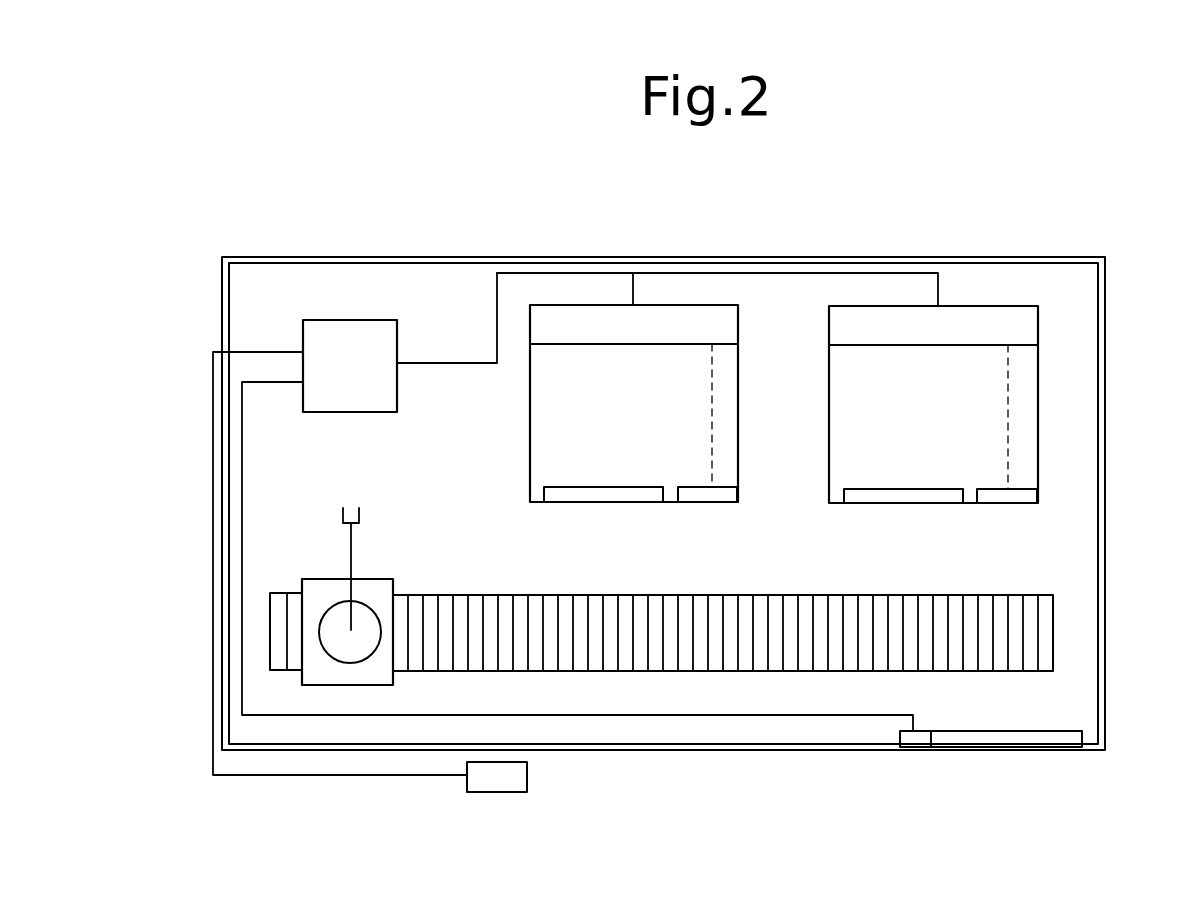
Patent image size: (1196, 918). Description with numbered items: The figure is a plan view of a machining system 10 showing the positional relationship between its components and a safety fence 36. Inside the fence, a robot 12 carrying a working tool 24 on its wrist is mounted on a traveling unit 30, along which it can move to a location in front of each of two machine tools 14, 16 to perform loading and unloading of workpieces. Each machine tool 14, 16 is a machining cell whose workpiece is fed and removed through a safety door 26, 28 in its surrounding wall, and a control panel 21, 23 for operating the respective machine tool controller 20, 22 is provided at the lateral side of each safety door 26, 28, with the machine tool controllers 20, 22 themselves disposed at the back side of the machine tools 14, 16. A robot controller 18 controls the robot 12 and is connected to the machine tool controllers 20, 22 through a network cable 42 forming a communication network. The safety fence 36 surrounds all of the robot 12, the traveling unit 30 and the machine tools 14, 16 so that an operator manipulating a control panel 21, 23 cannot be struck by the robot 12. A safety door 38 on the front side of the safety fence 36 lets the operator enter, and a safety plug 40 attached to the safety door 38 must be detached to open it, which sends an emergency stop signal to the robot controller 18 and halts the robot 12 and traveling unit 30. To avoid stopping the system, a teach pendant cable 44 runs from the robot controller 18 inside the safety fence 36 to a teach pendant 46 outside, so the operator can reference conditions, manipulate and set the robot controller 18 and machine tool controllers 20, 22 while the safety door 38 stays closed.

The machining system 10 is at (940, 232).
The robot 12 is at (393, 585).
The machine tool 14 is at (726, 418).
The machine tool 16 is at (1030, 435).
The robot controller 18 is at (378, 378).
The machine tool controller 20 is at (725, 327).
The control panel 21 is at (710, 497).
The machine tool controller 22 is at (1015, 322).
The control panel 23 is at (1012, 498).
The working tool 24 is at (359, 517).
The safety door 26 is at (588, 496).
The safety door 28 is at (895, 498).
The traveling unit 30 is at (968, 672).
The safety fence 36 is at (1105, 507).
The safety door 38 is at (1055, 748).
The safety plug 40 is at (916, 748).
The network cable 42 is at (593, 273).
The teach pendant cable 44 is at (210, 565).
The teach pendant 46 is at (527, 775).